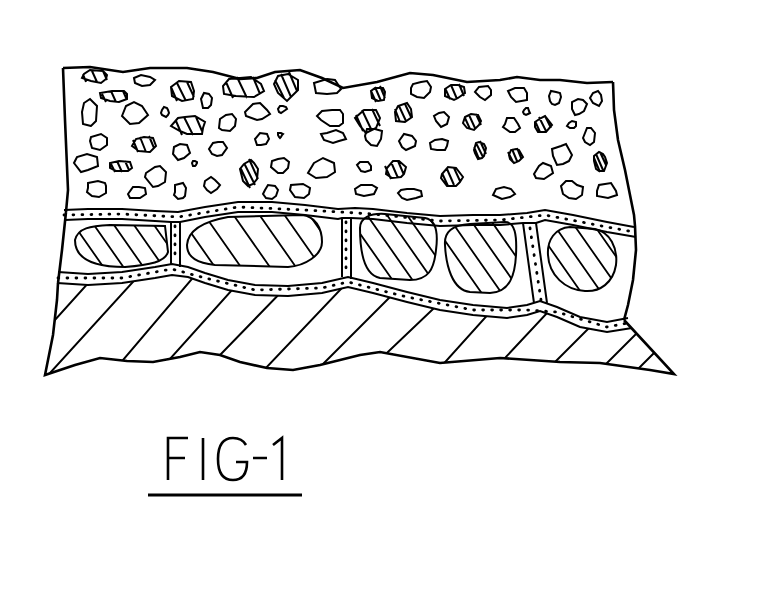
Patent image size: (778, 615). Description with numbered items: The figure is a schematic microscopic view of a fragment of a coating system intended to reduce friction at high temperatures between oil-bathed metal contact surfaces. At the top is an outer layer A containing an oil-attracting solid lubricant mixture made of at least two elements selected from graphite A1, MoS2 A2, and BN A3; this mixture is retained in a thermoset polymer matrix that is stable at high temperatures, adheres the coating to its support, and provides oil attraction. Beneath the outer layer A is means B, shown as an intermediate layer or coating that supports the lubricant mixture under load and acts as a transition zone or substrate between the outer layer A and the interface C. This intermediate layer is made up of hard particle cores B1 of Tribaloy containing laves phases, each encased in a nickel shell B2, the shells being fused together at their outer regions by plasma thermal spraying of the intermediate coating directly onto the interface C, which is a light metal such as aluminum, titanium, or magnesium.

The outer layer A is at (516, 70).
The graphite A1 is at (240, 80).
The MoS2 A2 is at (423, 82).
The BN A3 is at (575, 194).
The means for supporting the mixture B is at (650, 272).
The hard particle cores B1 is at (577, 262).
The nickel shell B2 is at (522, 290).
The interface C is at (521, 372).